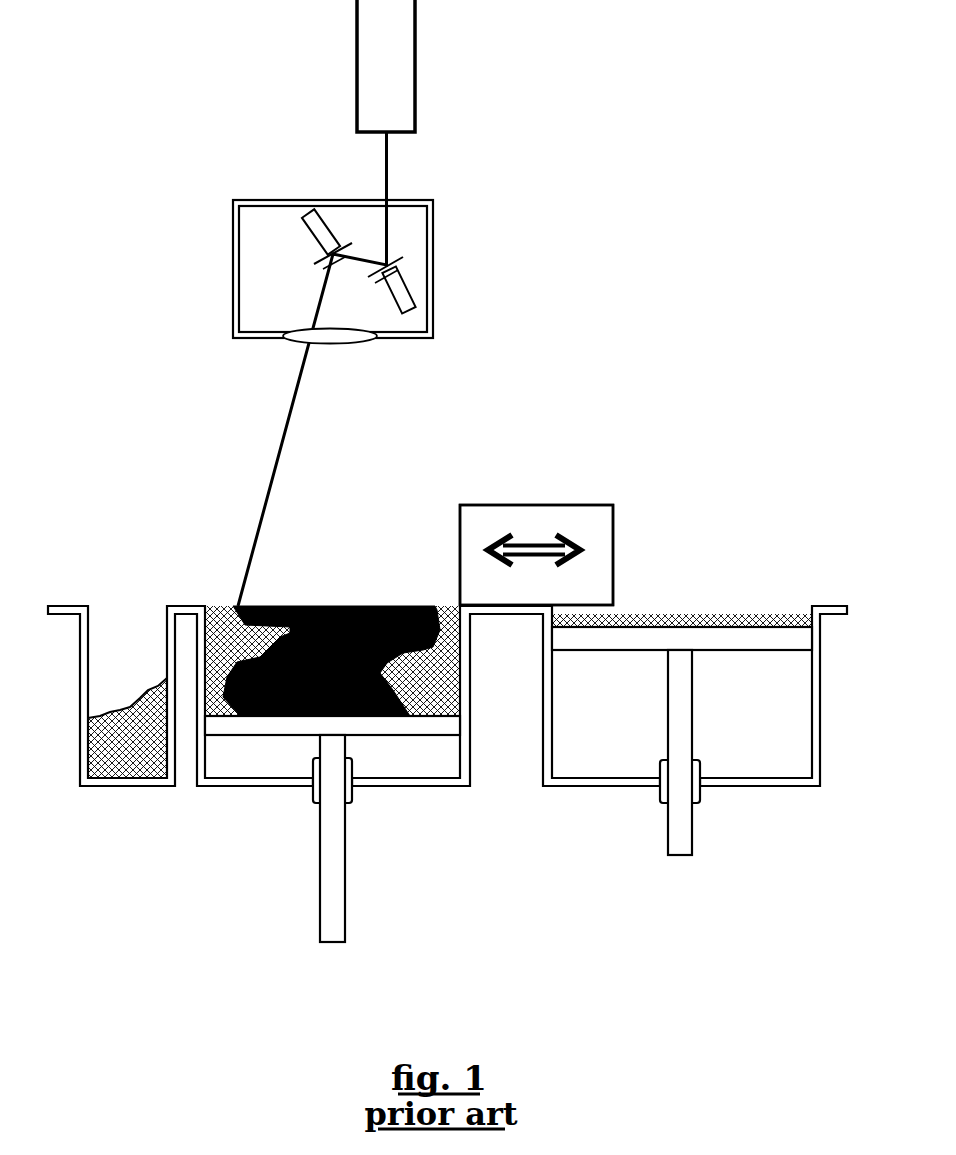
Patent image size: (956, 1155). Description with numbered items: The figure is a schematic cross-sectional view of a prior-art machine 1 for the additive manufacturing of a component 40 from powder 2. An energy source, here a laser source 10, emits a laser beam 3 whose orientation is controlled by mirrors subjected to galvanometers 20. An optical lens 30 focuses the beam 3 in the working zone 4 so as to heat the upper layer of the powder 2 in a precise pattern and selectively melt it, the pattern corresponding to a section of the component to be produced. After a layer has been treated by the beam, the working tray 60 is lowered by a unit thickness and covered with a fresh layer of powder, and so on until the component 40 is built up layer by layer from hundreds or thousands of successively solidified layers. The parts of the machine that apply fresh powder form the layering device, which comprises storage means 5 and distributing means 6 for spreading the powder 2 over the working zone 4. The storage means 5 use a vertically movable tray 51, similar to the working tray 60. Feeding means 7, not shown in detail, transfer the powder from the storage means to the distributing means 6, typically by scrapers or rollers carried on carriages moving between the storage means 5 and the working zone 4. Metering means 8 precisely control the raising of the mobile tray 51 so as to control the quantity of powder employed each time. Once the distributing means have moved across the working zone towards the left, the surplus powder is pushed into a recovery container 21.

The additive manufacturing apparatus 1 is at (132, 347).
The powder 2 is at (122, 752).
The laser beam 3 is at (277, 453).
The working zone 4 is at (432, 709).
The storage means 5 is at (699, 666).
The distributing means 6 is at (576, 478).
The feeding means 7 is at (536, 496).
The metering means 8 is at (678, 732).
The laser source 10 is at (370, 12).
The galvanometers 20 is at (314, 228).
The recovery container 21 is at (118, 664).
The optical lens 30 is at (332, 340).
The component 40 is at (313, 657).
The vertically movable tray 51 is at (618, 636).
The working tray 60 is at (371, 723).